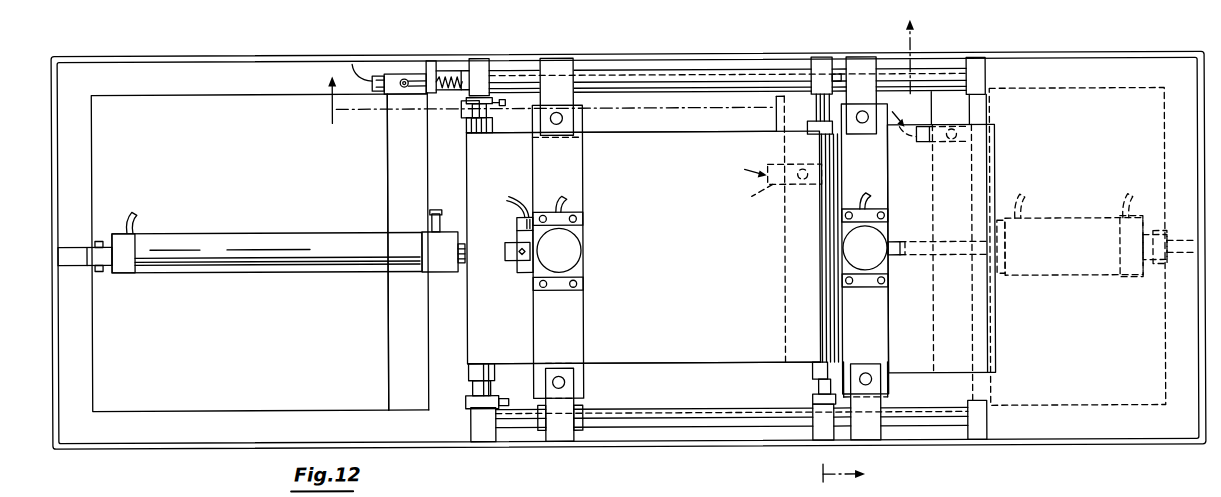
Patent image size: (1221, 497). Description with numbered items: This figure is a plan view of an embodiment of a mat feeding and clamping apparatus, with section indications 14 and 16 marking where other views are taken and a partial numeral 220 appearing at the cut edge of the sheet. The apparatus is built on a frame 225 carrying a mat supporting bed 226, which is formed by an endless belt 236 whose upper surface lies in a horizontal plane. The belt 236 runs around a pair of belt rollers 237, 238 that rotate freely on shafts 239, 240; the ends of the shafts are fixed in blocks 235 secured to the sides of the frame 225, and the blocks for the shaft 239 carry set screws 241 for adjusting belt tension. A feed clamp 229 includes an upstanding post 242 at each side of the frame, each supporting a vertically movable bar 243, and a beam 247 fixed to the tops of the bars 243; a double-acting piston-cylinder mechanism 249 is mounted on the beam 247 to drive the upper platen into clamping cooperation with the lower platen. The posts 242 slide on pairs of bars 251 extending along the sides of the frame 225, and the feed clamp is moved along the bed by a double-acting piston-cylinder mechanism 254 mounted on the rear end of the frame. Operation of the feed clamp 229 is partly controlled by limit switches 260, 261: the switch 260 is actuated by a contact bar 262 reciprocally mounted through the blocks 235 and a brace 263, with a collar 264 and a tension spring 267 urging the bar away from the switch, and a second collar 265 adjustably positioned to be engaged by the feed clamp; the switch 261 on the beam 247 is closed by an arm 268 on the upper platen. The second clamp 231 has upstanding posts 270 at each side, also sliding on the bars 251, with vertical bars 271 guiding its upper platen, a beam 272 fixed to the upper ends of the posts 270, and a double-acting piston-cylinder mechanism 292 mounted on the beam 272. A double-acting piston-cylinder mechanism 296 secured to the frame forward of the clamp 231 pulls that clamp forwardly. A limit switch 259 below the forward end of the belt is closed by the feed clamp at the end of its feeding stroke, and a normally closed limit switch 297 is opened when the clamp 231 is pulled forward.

The section line 14- 14 is at (620, 72).
The section line 16- 16 is at (828, 474).
The frame 225 is at (239, 454).
The mat supporting bed 226 is at (718, 364).
The feed clamp 229 is at (584, 291).
The clamp 231 is at (893, 287).
The blocks 235 is at (506, 46).
The endless belt 236 is at (670, 150).
The belt roller 237 is at (480, 364).
The belt roller 238 is at (812, 370).
The shaft 239 is at (485, 130).
The shaft 240 is at (817, 110).
The set screws 241 is at (503, 105).
The upstanding post 242 is at (578, 70).
The vertically movable bar 243 is at (564, 124).
The beam 247 is at (578, 332).
The double-acting piston-cylinder mechanism 249 is at (569, 246).
The bars 251 is at (686, 72).
The double-acting piston-cylinder mechanism 254 is at (218, 232).
The limit switch 259 is at (774, 191).
The limit switch 260 is at (403, 78).
The limit switch 261 is at (517, 233).
The contact bar 262 is at (420, 94).
The brace 263 is at (431, 62).
The collar 264 is at (458, 72).
The second collar 265 is at (578, 44).
The tension spring 267 is at (466, 100).
The arm 268 is at (508, 261).
The upstanding post 270 is at (863, 62).
The vertical bars 271 is at (863, 125).
The beam 272 is at (884, 208).
The double-acting piston-cylinder mechanism 292 is at (848, 252).
The double-acting piston-cylinder mechanism 296 is at (1068, 219).
The normally closed limit switch 297 is at (925, 142).
The lower assembly (partial) 220 is at (578, 496).